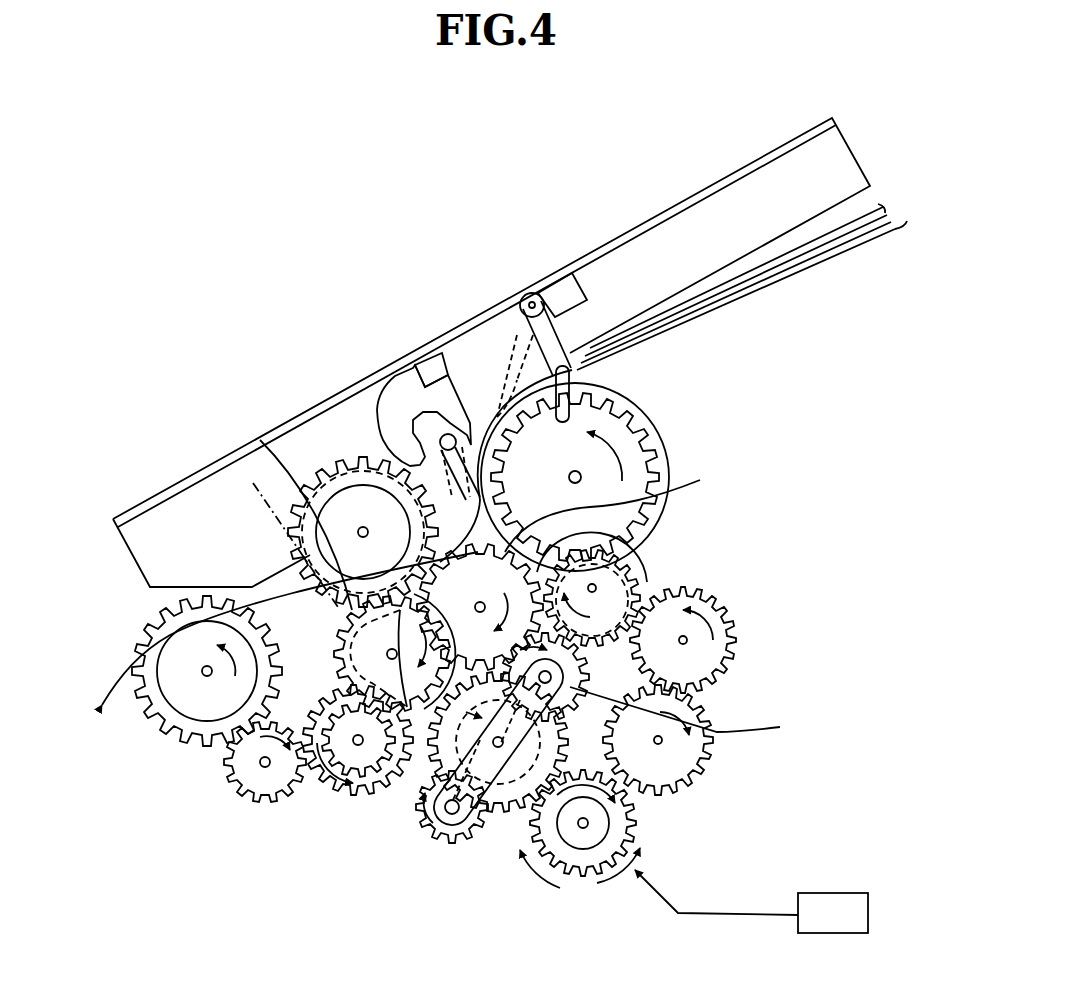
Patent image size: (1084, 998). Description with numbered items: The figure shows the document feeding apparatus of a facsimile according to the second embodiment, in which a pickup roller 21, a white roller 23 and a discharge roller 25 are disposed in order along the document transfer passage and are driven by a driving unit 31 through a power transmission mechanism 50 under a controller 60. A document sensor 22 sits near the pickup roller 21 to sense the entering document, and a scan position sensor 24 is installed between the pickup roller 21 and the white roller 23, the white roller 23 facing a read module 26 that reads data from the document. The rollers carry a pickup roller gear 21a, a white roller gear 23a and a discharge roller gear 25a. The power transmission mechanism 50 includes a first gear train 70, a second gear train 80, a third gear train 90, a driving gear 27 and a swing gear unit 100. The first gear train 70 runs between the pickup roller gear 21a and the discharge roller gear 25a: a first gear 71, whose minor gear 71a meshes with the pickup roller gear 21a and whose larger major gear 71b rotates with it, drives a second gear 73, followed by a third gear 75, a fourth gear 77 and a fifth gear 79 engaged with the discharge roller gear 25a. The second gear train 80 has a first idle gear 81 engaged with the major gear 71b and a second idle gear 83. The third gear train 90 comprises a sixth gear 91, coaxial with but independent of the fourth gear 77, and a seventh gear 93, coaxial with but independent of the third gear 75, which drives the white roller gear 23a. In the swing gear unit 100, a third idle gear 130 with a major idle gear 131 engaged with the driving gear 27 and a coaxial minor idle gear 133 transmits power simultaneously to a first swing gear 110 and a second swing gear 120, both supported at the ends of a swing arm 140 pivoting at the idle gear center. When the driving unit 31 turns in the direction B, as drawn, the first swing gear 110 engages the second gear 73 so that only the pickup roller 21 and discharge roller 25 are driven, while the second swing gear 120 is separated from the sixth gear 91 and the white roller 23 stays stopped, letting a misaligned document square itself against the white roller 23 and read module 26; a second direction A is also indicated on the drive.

The pickup roller 21 is at (611, 457).
The pickup roller gear 21a is at (660, 434).
The document sensor 22 is at (528, 298).
The white roller 23 is at (342, 497).
The white roller gear 23a is at (333, 480).
The scan position sensor 24 is at (424, 362).
The discharge roller 25 is at (188, 707).
The discharge roller gear 25a is at (160, 708).
The read module 26 is at (253, 483).
The driving gear 27 is at (632, 812).
The driving unit 31 is at (615, 855).
The power transmission mechanism 50 is at (306, 874).
The controller 60 is at (833, 900).
The first gear train 70 is at (252, 800).
The first gear 71 is at (668, 577).
The minor gear 71a is at (632, 572).
The major gear 71b is at (647, 592).
The second gear 73 is at (615, 512).
The third gear 75 is at (333, 640).
The fourth gear 77 is at (323, 770).
The fifth gear 79 is at (237, 785).
The second gear train 80 is at (737, 651).
The first idle gear 81 is at (727, 617).
The second idle gear 83 is at (700, 732).
The third gear train 90 is at (395, 790).
The sixth gear 91 is at (365, 763).
The seventh gear 93 is at (330, 655).
The swing gear unit 100 is at (427, 840).
The first swing gear 110 is at (695, 713).
The second swing gear 120 is at (502, 832).
The third idle gear 130 is at (523, 850).
The major idle gear 131 is at (540, 780).
The minor idle gear 133 is at (565, 705).
The swing arm 140 is at (446, 845).
The rotation direction A is at (652, 856).
The B direction B is at (527, 881).